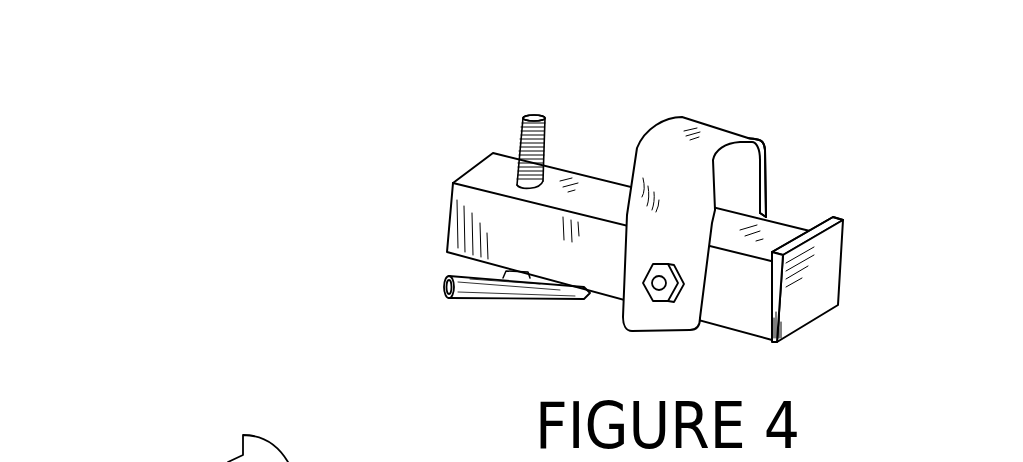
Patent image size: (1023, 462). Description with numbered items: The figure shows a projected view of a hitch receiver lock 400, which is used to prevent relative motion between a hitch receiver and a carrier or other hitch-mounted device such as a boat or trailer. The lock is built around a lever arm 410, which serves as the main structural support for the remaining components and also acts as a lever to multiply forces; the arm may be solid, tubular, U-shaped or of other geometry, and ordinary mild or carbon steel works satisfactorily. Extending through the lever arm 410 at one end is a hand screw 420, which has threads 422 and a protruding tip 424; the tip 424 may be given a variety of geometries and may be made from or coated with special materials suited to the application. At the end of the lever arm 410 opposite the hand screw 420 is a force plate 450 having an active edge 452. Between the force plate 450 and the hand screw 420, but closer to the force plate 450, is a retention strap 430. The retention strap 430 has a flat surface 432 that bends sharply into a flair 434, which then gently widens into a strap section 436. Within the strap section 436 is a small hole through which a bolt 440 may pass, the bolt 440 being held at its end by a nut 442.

The hitch receiver lock 400 is at (843, 62).
The lever arm 410 is at (472, 203).
The hand screw 420 is at (463, 285).
The threads 422 is at (518, 140).
The protruding tip 424 is at (533, 114).
The retention strap 430 is at (672, 132).
The flat surface 432 is at (757, 136).
The flair 434 is at (770, 195).
The strap section 436 is at (768, 212).
The bolt 440 is at (652, 283).
The nut 442 is at (588, 294).
The force plate 450 is at (820, 265).
The active edge 452 is at (840, 218).